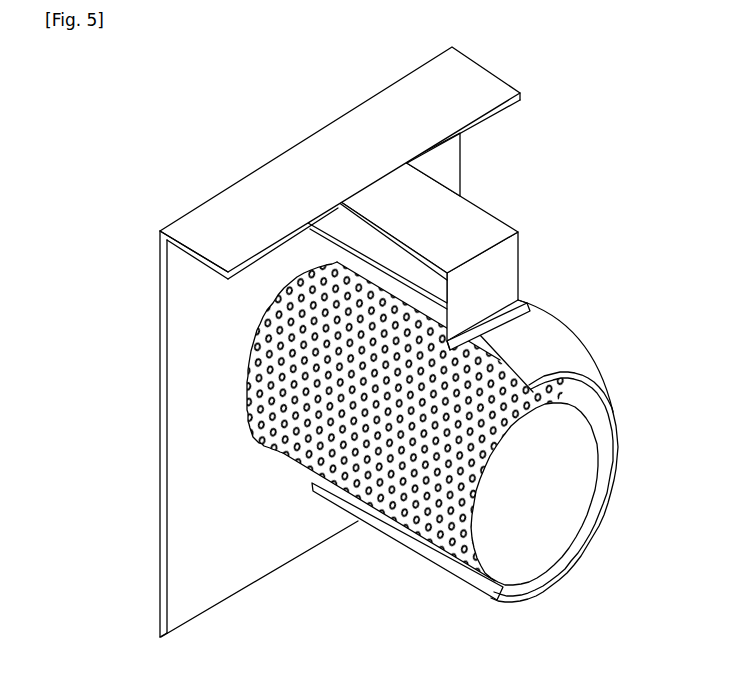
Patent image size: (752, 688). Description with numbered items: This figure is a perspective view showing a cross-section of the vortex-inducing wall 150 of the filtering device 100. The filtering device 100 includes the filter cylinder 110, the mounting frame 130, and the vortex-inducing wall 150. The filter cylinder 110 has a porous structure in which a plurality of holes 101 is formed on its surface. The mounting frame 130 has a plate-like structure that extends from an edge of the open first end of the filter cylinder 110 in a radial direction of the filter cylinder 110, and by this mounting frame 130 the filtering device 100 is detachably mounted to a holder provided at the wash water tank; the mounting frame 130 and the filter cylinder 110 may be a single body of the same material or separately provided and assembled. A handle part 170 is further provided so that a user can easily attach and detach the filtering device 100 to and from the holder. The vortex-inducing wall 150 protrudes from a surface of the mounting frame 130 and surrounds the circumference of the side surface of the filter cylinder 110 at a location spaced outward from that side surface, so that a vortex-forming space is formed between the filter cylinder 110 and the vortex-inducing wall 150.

The filtering device 100 is at (148, 149).
The holes 101 is at (247, 372).
The filter cylinder 110 is at (330, 431).
The mounting frame 130 is at (185, 302).
The vortex-inducing wall 150 is at (563, 352).
The handle part 170 is at (472, 224).